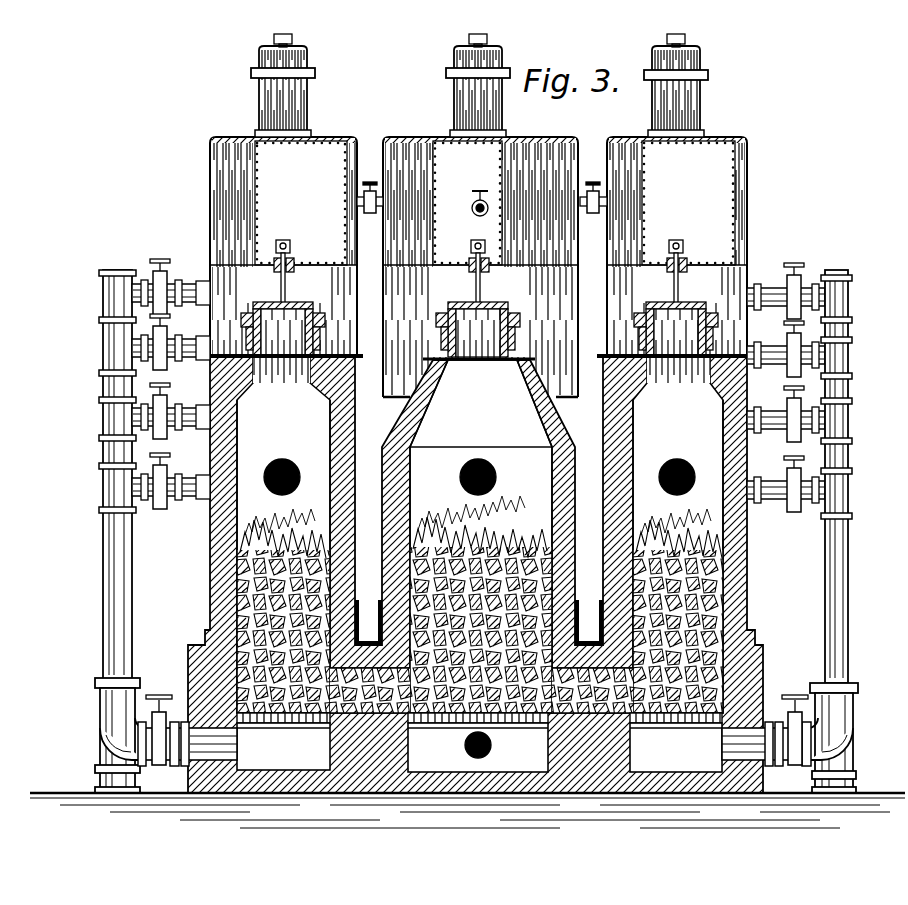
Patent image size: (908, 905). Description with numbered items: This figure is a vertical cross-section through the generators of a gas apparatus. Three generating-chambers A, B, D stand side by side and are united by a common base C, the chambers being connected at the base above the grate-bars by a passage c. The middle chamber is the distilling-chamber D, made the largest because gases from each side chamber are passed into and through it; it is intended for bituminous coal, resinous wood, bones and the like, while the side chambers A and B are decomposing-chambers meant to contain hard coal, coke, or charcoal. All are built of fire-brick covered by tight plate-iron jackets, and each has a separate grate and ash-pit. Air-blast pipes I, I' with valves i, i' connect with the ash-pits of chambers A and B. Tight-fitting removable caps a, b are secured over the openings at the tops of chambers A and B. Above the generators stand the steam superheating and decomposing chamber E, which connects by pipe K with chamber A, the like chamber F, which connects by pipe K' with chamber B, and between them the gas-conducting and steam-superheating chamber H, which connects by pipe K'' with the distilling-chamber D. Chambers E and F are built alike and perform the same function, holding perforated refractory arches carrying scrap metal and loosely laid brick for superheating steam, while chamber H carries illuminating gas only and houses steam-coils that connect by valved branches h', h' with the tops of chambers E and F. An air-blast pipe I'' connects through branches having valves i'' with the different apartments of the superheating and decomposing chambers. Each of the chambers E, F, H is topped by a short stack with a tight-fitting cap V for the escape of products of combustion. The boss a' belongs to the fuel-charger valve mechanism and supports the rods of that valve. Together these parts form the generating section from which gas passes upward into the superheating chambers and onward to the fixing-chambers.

The escape pipe valve V is at (483, 85).
The steam superheating and decomposing chamber E is at (283, 247).
The gas-conducting and steam-superheating chamber H is at (480, 267).
The steam superheating and decomposing chamber F is at (677, 247).
The branch h' is at (482, 212).
The removable cap a is at (283, 298).
The boss a' is at (478, 298).
The removable cap b is at (676, 298).
The decomposing-chamber A is at (259, 556).
The decomposing-chamber B is at (700, 556).
The distilling-chamber D is at (481, 536).
The common base C is at (478, 679).
The passage c is at (479, 742).
The pipe K is at (282, 467).
The pipe K' is at (677, 463).
The pipe K'' is at (478, 463).
The air-blast pipe I is at (103, 531).
The air-blast pipe I' is at (844, 738).
The air-blast pipe I'' is at (854, 476).
The valve i is at (187, 730).
The valve i' is at (766, 730).
The valve i'' is at (478, 385).